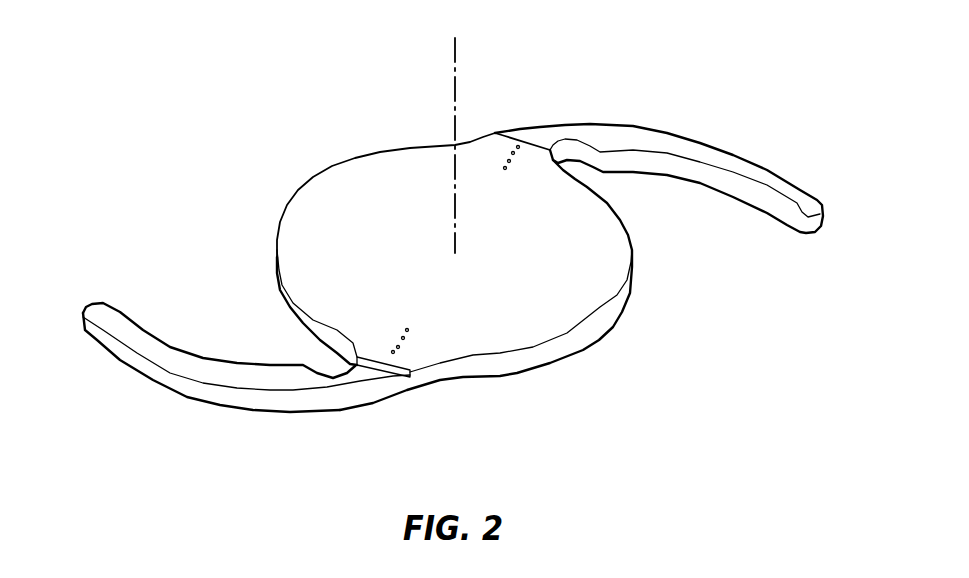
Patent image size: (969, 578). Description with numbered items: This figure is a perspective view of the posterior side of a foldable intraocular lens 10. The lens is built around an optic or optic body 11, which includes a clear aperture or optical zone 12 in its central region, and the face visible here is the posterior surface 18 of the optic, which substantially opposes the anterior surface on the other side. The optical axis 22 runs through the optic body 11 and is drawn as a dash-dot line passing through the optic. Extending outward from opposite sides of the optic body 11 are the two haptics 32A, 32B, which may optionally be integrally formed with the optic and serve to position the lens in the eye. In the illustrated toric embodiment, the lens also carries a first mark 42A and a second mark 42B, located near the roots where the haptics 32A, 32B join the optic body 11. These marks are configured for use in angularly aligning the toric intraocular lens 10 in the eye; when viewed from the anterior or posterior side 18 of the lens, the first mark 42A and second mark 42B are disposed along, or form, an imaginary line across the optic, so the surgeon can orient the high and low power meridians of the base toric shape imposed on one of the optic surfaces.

The foldable intraocular lens 10 is at (453, 251).
The optic body 11 is at (268, 222).
The optical zone 12 is at (505, 290).
The posterior surface 18 is at (378, 172).
The optical axis 22 is at (452, 47).
The haptic 32A is at (191, 418).
The haptic 32B is at (745, 122).
The first mark 42A is at (399, 322).
The second mark 42B is at (507, 140).